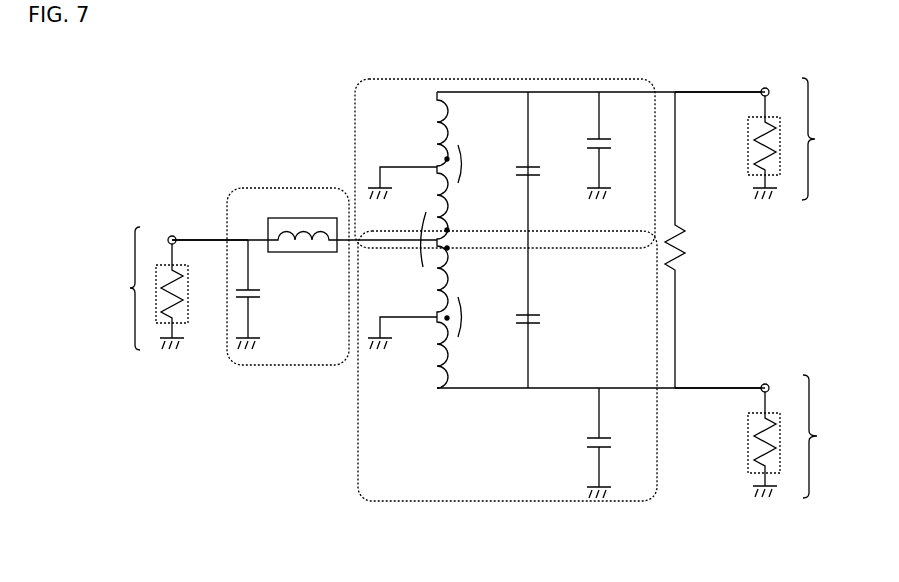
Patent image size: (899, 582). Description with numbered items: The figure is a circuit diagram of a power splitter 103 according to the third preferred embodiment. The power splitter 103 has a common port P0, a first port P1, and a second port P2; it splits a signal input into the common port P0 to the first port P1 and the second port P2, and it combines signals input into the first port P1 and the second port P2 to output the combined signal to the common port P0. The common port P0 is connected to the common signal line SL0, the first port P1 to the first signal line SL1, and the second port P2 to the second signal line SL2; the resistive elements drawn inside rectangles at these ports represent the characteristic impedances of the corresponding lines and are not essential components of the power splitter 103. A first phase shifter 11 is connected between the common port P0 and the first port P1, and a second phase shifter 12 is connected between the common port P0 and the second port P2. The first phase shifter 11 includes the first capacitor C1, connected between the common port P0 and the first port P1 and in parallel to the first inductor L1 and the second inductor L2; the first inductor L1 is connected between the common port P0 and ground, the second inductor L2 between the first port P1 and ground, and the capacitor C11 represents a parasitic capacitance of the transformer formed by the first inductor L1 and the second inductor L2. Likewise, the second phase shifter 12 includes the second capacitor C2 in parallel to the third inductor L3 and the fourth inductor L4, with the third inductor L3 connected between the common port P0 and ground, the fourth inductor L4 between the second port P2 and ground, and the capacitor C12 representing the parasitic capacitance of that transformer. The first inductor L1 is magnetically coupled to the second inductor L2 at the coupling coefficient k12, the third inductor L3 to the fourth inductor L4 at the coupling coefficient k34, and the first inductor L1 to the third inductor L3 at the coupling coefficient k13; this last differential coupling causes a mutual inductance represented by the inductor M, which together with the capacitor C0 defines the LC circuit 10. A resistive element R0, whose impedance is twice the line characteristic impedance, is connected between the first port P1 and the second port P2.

The power splitter 103 is at (305, 50).
The LC circuit 10 is at (288, 251).
The first phase shifter 11 is at (505, 207).
The second phase shifter 12 is at (507, 385).
The common signal line SL0 is at (205, 238).
The first signal line SL1 is at (713, 92).
The second signal line SL2 is at (712, 388).
The common port P0 is at (138, 288).
The first port P1 is at (802, 139).
The second port P2 is at (802, 436).
The inductor M is at (302, 223).
The capacitor C0 is at (266, 294).
The first capacitor C1 is at (546, 170).
The second capacitor C2 is at (546, 319).
The capacitor C11 is at (620, 145).
The capacitor C12 is at (618, 443).
The first inductor L1 is at (458, 203).
The second inductor L2 is at (408, 145).
The third inductor L3 is at (424, 294).
The fourth inductor L4 is at (428, 352).
The coupling coefficient k12 is at (483, 164).
The coupling coefficient k13 is at (404, 246).
The coupling coefficient k34 is at (483, 317).
The resistive element R0 is at (691, 240).